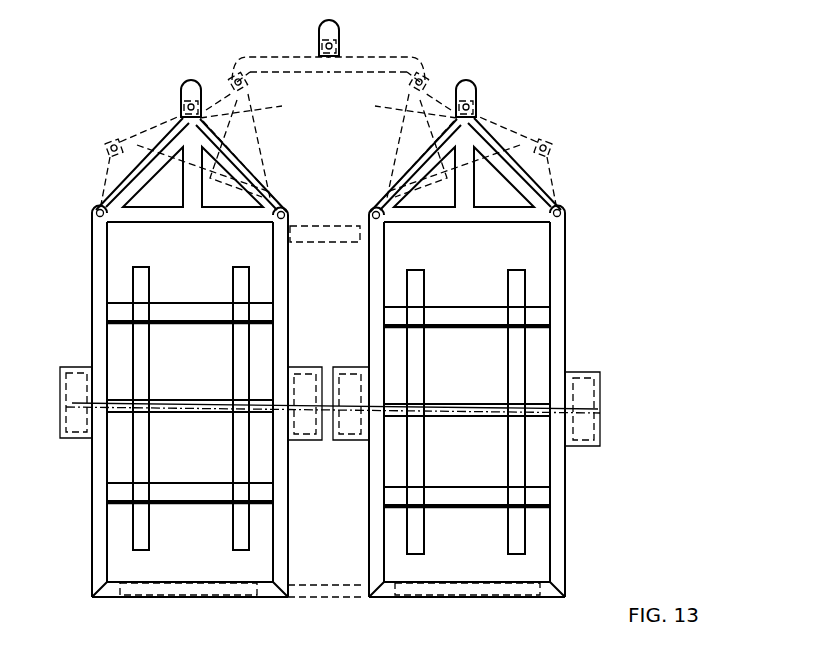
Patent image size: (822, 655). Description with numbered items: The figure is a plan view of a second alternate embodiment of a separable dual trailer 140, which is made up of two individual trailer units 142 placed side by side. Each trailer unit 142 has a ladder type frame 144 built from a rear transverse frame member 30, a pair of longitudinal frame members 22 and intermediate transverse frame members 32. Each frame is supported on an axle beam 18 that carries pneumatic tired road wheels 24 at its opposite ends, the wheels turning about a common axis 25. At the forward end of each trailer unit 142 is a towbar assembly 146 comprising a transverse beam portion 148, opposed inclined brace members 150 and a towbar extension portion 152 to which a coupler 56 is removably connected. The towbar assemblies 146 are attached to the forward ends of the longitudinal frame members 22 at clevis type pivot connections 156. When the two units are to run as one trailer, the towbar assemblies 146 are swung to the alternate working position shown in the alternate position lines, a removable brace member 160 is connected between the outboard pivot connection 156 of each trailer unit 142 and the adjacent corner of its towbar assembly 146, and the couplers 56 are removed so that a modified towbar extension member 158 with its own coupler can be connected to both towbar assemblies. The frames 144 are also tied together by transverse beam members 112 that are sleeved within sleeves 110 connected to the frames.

The separable dual trailer 140 is at (582, 89).
The trailer unit 142 is at (119, 606).
The longitudinal frame member 22 is at (98, 478).
The ladder type frame 144 is at (96, 261).
The transverse beam portion 148 is at (447, 222).
The rear transverse frame member 30 is at (490, 607).
The intermediate transverse frame member 32 is at (181, 313).
The axle beam 18 is at (173, 413).
The axis 25 is at (208, 400).
The road wheel 24 is at (82, 367).
The sleeve 110 is at (267, 607).
The transverse beam member 112 is at (310, 600).
The clevis type pivot connection 156 is at (97, 215).
The coupler 56 is at (339, 33).
The towbar assembly 146 is at (162, 140).
The towbar extension member 158 is at (287, 56).
The removable brace member 160 is at (98, 185).
The inclined brace member 150 is at (100, 167).
The towbar extension portion 152 is at (252, 118).